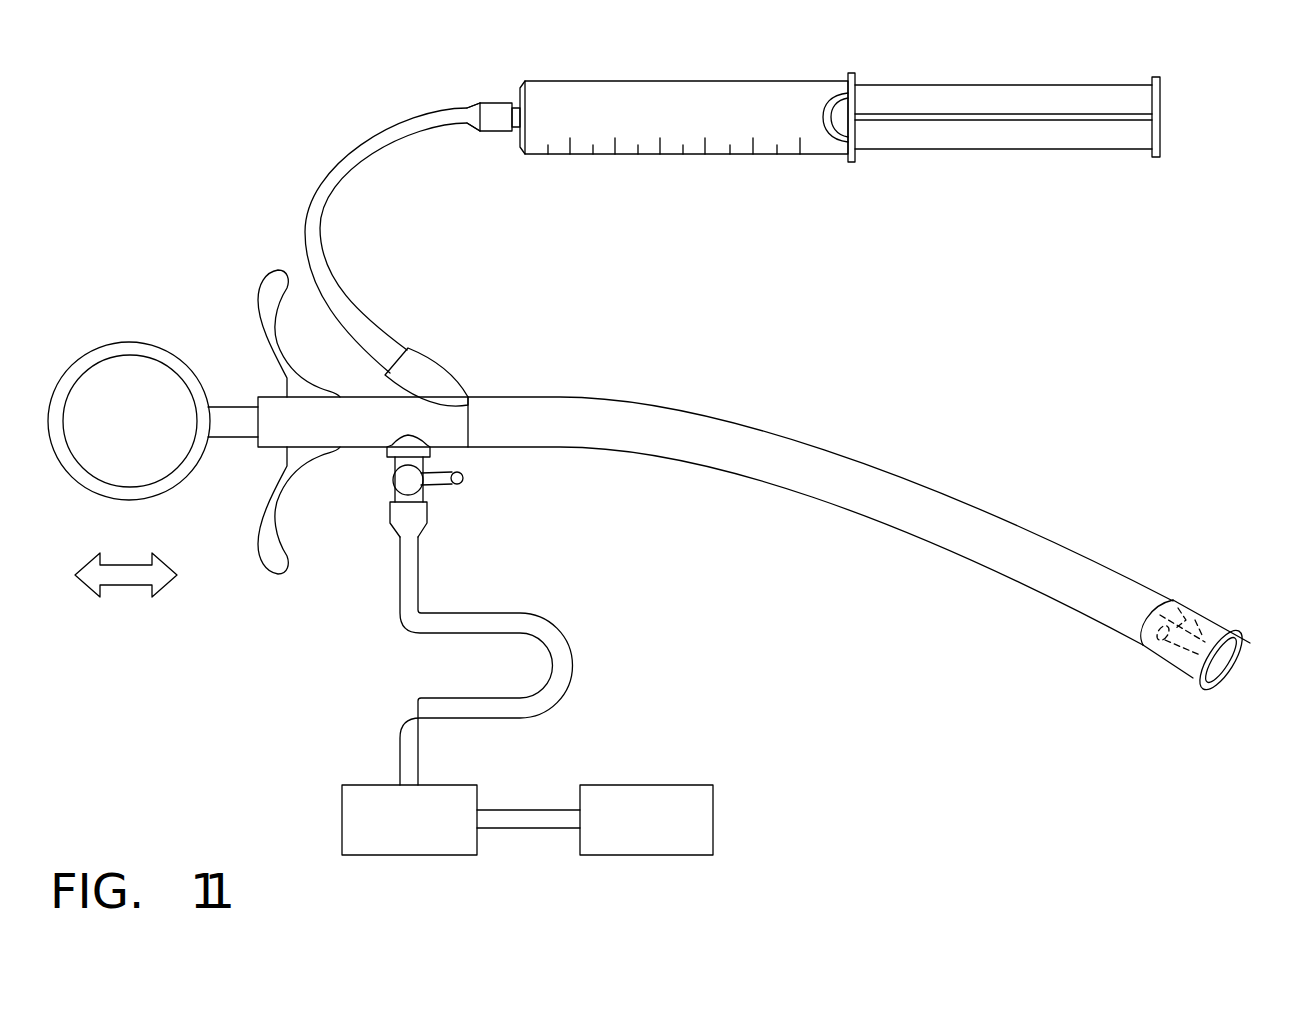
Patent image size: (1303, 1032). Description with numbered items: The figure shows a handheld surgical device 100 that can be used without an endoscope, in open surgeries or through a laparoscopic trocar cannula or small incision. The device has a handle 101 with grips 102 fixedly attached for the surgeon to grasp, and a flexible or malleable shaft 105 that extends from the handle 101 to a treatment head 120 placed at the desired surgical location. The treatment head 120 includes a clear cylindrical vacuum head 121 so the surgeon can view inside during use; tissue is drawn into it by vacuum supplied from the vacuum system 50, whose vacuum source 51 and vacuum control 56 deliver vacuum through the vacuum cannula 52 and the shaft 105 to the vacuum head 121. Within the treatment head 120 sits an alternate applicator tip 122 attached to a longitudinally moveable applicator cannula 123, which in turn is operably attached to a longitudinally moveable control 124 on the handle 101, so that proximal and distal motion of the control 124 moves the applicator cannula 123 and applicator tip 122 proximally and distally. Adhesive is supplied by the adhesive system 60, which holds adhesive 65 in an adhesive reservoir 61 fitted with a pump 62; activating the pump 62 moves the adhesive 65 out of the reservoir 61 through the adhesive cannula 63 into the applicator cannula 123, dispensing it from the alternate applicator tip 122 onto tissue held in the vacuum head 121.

The vacuum system 50 is at (749, 741).
The vacuum source 51 is at (647, 783).
The vacuum cannula 52 is at (566, 667).
The vacuum control 56 is at (375, 783).
The adhesive system 60 is at (1205, 110).
The adhesive reservoir 61 is at (624, 86).
The pump 62 is at (980, 150).
The adhesive cannula 63 is at (357, 150).
The adhesive 65 is at (662, 145).
The surgical device 100 is at (898, 330).
The handle 101 is at (128, 295).
The grips 102 is at (267, 293).
The shaft 105 is at (943, 485).
The treatment head 120 is at (1171, 738).
The vacuum head 121 is at (1207, 680).
The alternate applicator tip 122 is at (1210, 623).
The applicator cannula 123 is at (1190, 605).
The control 124 is at (67, 477).